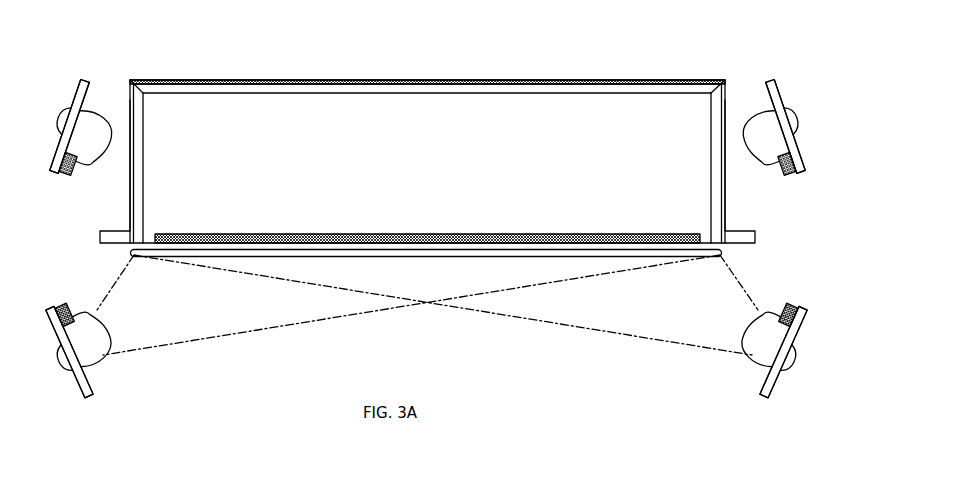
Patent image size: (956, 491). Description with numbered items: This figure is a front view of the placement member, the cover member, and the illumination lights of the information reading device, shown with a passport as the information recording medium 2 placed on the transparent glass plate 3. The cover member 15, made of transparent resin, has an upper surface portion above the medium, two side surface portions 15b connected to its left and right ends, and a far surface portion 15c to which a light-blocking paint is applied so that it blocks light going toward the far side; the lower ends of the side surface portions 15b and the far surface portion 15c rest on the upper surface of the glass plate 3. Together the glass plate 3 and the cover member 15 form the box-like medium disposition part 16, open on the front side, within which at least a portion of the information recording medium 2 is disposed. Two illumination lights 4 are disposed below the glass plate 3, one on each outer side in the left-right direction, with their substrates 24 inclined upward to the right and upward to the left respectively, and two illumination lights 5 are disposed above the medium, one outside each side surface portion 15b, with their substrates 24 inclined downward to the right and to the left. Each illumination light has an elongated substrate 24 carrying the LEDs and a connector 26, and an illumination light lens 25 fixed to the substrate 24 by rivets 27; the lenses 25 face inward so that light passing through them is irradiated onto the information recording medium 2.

The information recording medium 2 is at (437, 234).
The glass plate 3 is at (589, 257).
The illumination light 4 is at (94, 420).
The illumination light 5 is at (82, 60).
The cover member 15 is at (415, 80).
The side surface portion 15b is at (146, 185).
The far surface portion 15c is at (588, 158).
The medium disposition part 16 is at (272, 158).
The substrate 24 is at (89, 80).
The illumination light lens 25 is at (82, 160).
The connector 26 is at (58, 176).
The rivet 27 is at (68, 112).